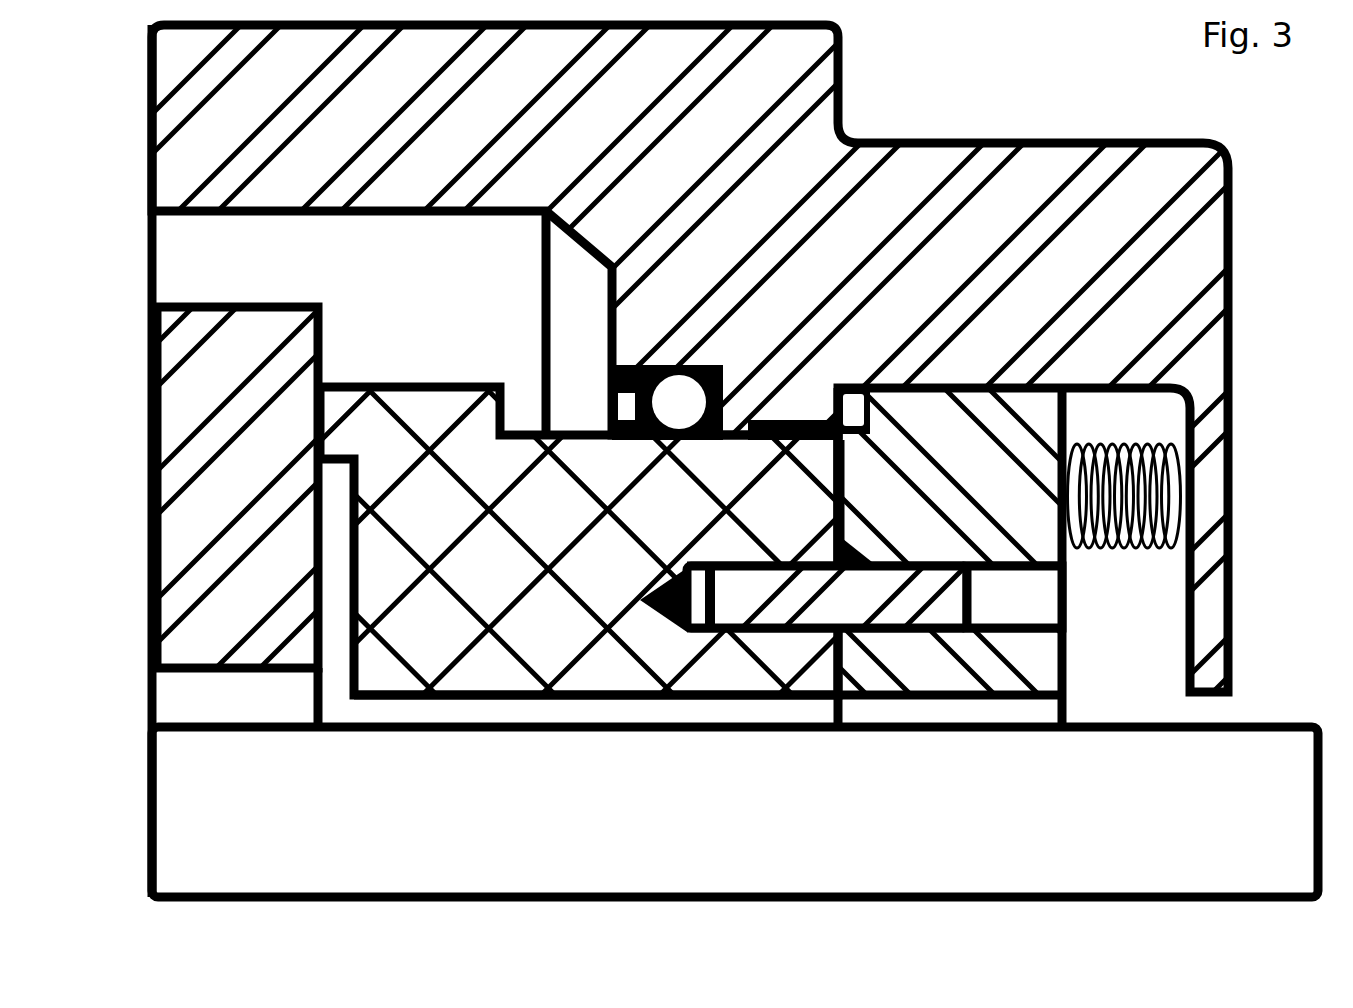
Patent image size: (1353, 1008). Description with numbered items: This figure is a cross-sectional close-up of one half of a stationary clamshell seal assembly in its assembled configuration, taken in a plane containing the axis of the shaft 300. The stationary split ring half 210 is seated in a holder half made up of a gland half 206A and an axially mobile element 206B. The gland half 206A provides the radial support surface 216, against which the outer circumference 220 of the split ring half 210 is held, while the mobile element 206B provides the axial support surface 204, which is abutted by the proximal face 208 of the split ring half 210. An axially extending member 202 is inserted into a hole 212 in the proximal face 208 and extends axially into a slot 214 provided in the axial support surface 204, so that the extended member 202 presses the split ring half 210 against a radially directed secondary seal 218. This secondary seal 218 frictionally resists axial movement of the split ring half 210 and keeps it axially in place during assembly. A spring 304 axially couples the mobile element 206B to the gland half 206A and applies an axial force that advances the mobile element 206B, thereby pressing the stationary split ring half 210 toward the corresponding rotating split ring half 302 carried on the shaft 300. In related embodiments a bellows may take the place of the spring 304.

The axially extending member 202 is at (844, 615).
The axial support surface 204 is at (845, 490).
The gland half 206A is at (1055, 280).
The axially mobile element 206B is at (991, 461).
The proximal face 208 is at (837, 510).
The split ring half 210 is at (523, 548).
The hole 212 is at (681, 568).
The slot 214 is at (1033, 612).
The radial support surface 216 is at (790, 417).
The radially directed secondary seal 218 is at (700, 417).
The outer circumference 220 is at (790, 432).
The shaft 300 is at (768, 818).
The rotating split ring half 302 is at (250, 423).
The spring 304 is at (1110, 550).